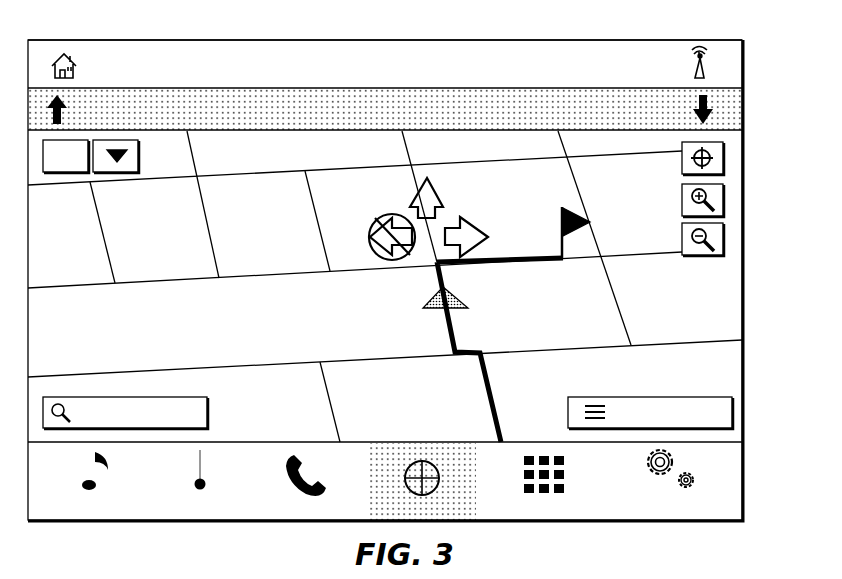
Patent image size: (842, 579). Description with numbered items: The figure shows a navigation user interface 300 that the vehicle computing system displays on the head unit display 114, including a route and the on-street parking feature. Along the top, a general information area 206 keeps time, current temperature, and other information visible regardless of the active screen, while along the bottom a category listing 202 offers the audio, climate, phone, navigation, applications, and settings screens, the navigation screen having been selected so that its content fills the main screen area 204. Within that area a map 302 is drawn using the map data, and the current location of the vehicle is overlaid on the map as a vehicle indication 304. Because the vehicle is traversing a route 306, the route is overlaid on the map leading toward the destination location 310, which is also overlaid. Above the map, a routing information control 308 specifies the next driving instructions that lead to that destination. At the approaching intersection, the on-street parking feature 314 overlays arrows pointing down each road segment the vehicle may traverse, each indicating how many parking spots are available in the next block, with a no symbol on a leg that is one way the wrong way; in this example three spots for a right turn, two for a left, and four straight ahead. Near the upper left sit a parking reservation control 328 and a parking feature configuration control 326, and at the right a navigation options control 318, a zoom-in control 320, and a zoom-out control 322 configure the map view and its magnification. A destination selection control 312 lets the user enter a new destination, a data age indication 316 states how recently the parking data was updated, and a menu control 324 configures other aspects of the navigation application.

The navigation user interface 300 is at (158, 34).
The head unit display 114 is at (654, 40).
The general information area 206 is at (751, 40).
The routing information control 308 is at (233, 132).
The main screen area 204 is at (751, 92).
The map 302 is at (655, 303).
The route 306 is at (497, 398).
The vehicle indication 304 is at (435, 310).
The destination location 310 is at (590, 223).
The on-street parking feature 314 is at (362, 255).
The parking reservation control 328 is at (67, 173).
The parking feature configuration control 326 is at (117, 173).
The navigation options control 318 is at (723, 158).
The zoom-in control 320 is at (723, 200).
The zoom-out control 322 is at (723, 240).
The destination selection control 312 is at (207, 413).
The data age indication 316 is at (716, 375).
The menu control 324 is at (732, 420).
The category listing 202 is at (751, 444).